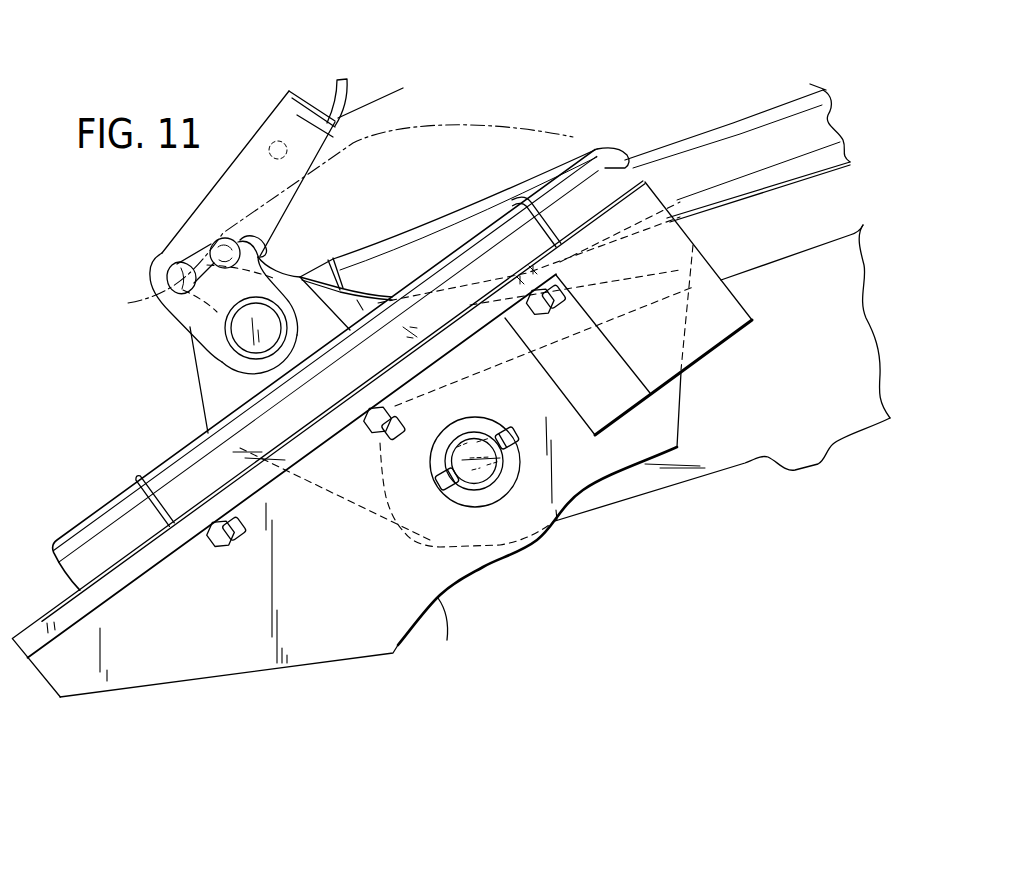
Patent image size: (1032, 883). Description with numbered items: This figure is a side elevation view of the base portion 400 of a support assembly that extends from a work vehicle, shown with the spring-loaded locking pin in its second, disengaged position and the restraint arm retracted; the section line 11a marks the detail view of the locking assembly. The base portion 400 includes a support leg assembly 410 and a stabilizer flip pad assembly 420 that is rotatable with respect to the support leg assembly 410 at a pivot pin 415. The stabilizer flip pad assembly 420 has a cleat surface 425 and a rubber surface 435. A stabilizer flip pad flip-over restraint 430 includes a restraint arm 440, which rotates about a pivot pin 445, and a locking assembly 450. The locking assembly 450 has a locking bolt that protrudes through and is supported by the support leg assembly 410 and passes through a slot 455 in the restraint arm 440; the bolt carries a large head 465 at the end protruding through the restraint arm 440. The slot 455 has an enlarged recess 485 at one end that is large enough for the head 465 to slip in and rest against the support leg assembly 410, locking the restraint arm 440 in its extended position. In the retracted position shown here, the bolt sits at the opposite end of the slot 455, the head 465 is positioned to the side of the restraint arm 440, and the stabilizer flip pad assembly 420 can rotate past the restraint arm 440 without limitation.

The base portion 400 is at (530, 595).
The support leg assembly 410 is at (754, 468).
The pivot pin 415 is at (481, 505).
The stabilizer flip pad assembly 420 is at (148, 690).
The cleat surface 425 is at (440, 601).
The stabilizer flip pad flip-over restraint 430 is at (263, 87).
The rubber surface 435 is at (58, 540).
The restraint arm 440 is at (215, 188).
The pivot pin 445 is at (214, 347).
The locking assembly 450 is at (141, 252).
The slot 455 is at (210, 259).
The head 465 is at (242, 238).
The recess 485 is at (151, 278).
The section line 11a is at (136, 457).